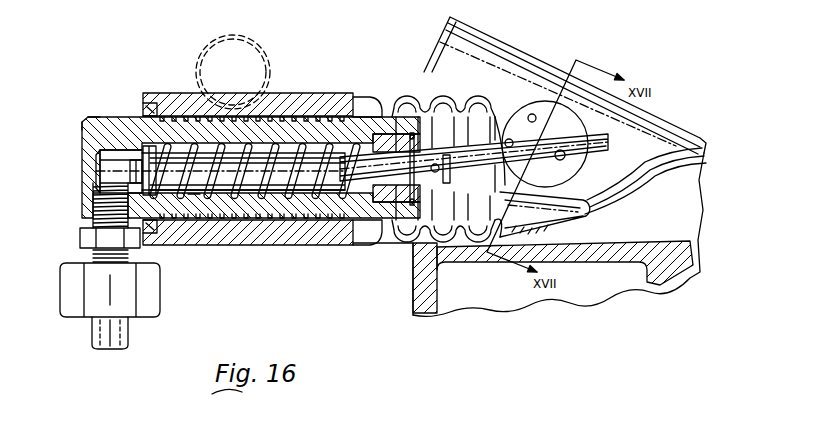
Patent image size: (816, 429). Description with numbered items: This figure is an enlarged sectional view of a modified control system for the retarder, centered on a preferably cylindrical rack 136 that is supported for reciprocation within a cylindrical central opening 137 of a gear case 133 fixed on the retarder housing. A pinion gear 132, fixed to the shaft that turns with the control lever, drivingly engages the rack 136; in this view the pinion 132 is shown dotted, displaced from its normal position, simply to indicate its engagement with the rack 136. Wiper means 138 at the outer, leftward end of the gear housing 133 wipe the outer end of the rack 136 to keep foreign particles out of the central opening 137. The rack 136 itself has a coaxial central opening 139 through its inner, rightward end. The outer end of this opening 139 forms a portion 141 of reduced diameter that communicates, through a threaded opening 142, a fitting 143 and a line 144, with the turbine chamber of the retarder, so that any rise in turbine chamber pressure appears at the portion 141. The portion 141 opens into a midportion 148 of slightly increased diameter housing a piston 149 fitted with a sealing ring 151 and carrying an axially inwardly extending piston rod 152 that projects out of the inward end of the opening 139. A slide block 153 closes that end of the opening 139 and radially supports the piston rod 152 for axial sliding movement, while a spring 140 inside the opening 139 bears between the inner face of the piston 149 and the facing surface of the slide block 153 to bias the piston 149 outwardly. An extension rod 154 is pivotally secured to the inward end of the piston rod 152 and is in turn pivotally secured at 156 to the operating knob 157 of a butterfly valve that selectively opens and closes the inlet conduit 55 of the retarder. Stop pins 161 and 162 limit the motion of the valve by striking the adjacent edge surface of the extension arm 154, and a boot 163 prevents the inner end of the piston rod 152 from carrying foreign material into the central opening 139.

The inlet conduit 55 is at (475, 38).
The pinion gear 132 is at (247, 45).
The gear case 133 is at (290, 106).
The rack 136 is at (133, 119).
The cylindrical central opening 137 is at (171, 118).
The wiper means 138 is at (154, 98).
The central opening 139 is at (196, 197).
The spring 140 is at (222, 195).
The portion of reduced diameter 141 is at (100, 157).
The threaded opening 142 is at (100, 212).
The fitting 143 is at (100, 256).
The line 144 is at (98, 333).
The midportion 148 is at (276, 196).
The piston 149 is at (130, 166).
The sealing ring 151 is at (112, 123).
The piston rod 152 is at (232, 150).
The slide block 153 is at (393, 140).
The extension rod 154 is at (600, 150).
The pivot 156 is at (562, 160).
The operating knob 157 is at (474, 154).
The pin 161 is at (506, 140).
The pin 162 is at (529, 115).
The boot 163 is at (450, 234).